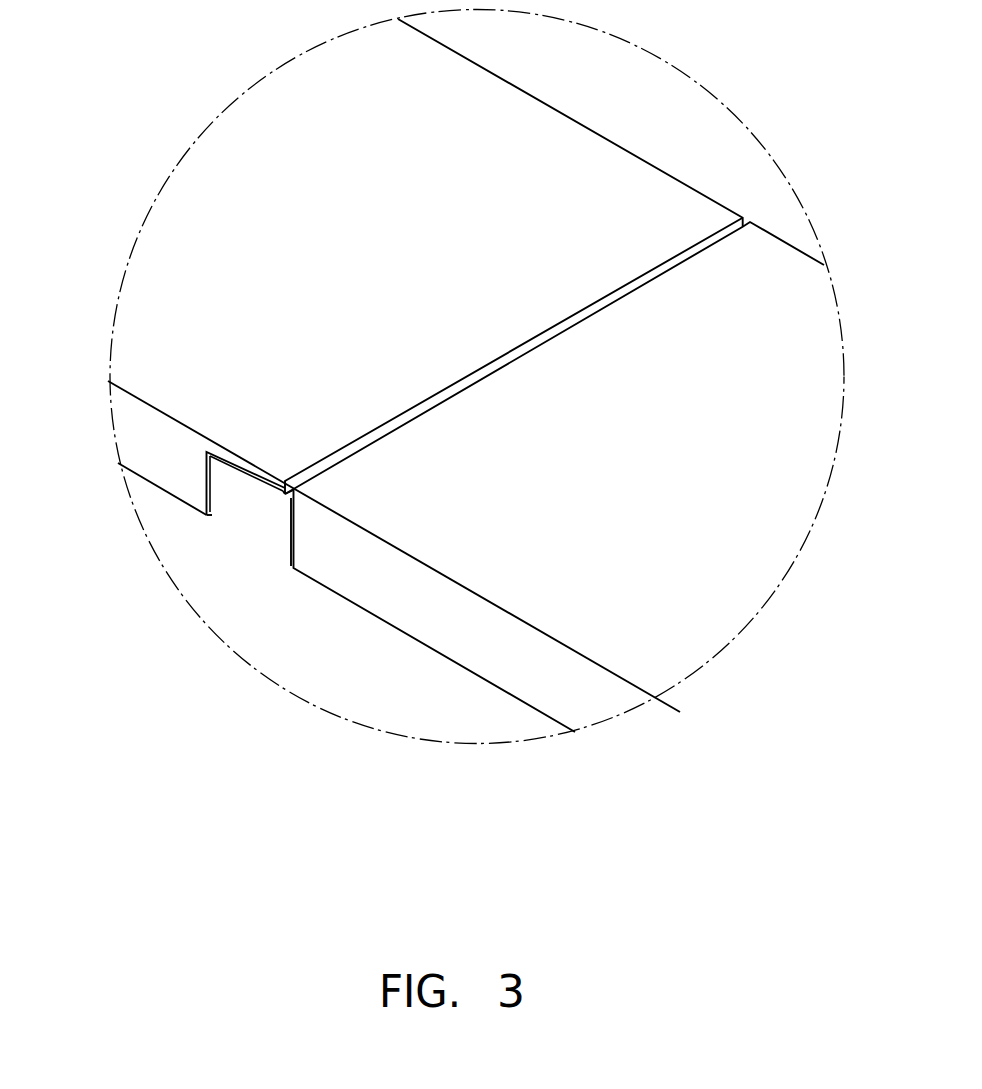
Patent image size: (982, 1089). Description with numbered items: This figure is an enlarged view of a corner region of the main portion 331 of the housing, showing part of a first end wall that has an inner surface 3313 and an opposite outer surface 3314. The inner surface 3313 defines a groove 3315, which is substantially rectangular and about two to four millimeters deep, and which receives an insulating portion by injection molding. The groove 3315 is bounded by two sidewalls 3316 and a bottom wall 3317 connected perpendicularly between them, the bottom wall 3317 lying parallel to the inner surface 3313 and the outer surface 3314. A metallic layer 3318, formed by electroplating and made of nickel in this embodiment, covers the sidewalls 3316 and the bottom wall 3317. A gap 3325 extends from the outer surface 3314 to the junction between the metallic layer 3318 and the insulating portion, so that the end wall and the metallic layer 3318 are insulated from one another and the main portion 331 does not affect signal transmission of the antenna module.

The main portion 331 is at (555, 675).
The inner surface 3313 is at (355, 603).
The outer surface 3314 is at (642, 613).
The groove 3315 is at (265, 512).
The sidewall 3316 is at (240, 473).
The bottom wall 3317 is at (204, 512).
The metallic layer 3318 is at (205, 485).
The gap 3325 is at (284, 497).